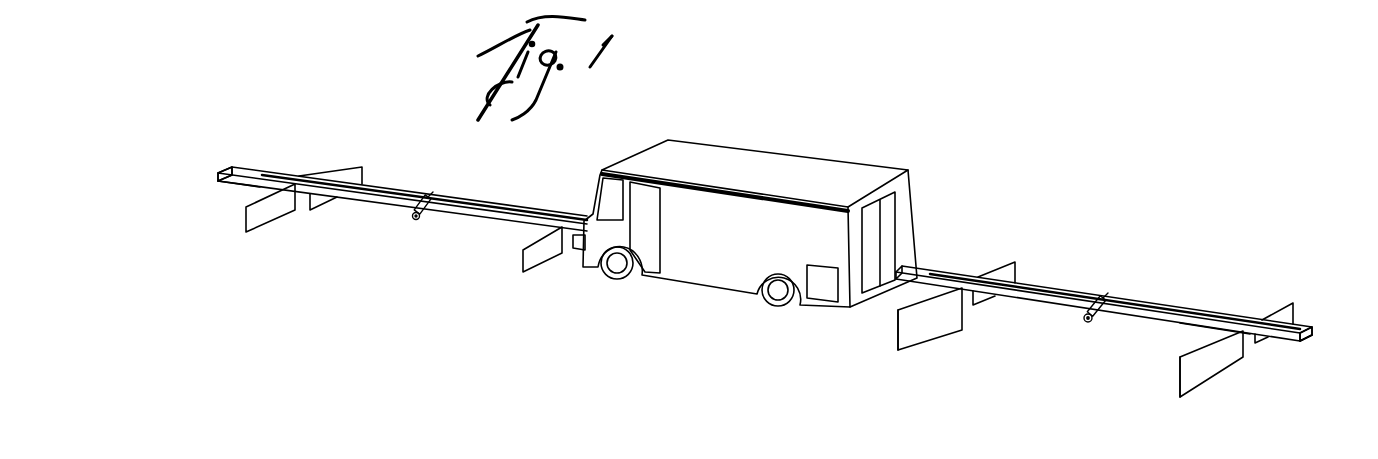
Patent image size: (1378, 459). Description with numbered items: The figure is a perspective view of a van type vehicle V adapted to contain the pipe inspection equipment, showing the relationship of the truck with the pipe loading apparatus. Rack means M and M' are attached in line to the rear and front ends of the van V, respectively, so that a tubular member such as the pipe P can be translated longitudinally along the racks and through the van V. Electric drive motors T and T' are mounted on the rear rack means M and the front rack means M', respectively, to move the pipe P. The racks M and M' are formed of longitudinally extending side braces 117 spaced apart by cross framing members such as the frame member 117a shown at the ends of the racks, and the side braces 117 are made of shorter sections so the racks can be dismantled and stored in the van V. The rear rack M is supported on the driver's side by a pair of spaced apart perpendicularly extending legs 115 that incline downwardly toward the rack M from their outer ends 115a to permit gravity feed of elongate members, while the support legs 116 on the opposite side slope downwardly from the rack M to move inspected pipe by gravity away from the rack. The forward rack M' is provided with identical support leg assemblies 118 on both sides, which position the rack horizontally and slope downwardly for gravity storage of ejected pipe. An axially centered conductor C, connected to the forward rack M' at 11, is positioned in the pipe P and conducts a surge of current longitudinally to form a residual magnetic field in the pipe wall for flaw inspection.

The van type vehicle V is at (770, 147).
The connection point 11 is at (282, 175).
The conductor C is at (495, 205).
The front rack means M' is at (211, 149).
The side braces 117 is at (230, 185).
The frame member 117a is at (1303, 338).
The support leg assemblies 118 is at (363, 178).
The front drive motor T' is at (396, 226).
The pipe P is at (1143, 303).
The rear rack means M is at (1320, 312).
The support legs 115 is at (947, 323).
The outer ends of support legs 115a is at (895, 308).
The support legs 116 is at (1015, 272).
The rear drive motor T is at (1070, 321).